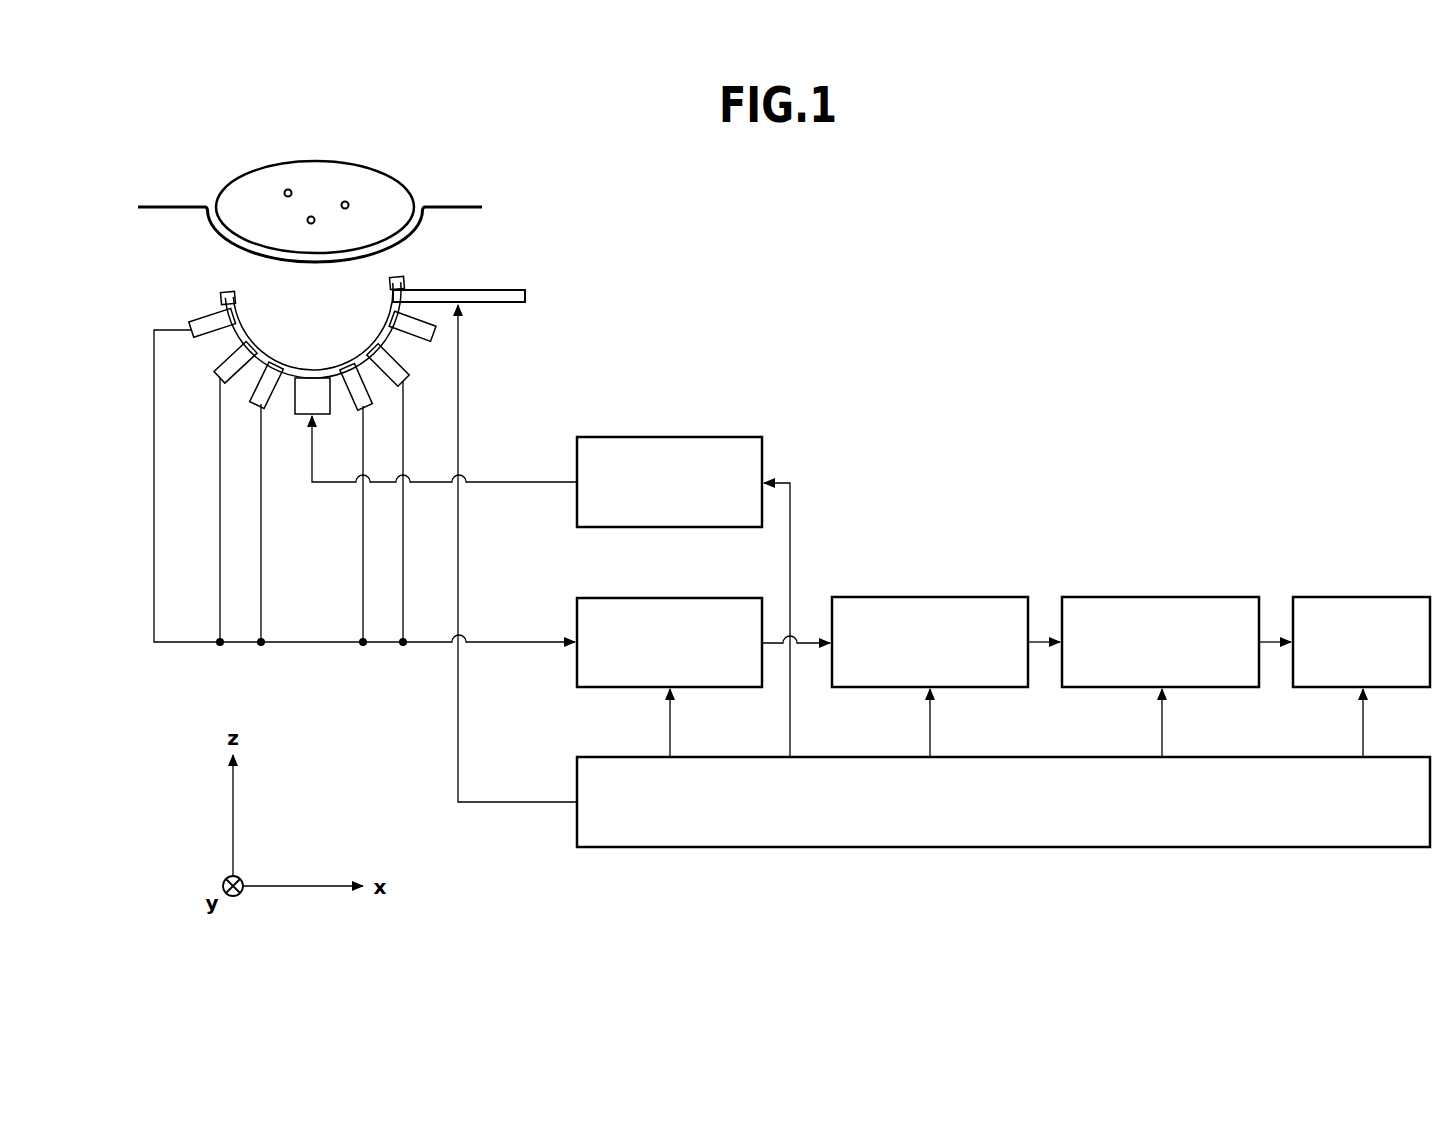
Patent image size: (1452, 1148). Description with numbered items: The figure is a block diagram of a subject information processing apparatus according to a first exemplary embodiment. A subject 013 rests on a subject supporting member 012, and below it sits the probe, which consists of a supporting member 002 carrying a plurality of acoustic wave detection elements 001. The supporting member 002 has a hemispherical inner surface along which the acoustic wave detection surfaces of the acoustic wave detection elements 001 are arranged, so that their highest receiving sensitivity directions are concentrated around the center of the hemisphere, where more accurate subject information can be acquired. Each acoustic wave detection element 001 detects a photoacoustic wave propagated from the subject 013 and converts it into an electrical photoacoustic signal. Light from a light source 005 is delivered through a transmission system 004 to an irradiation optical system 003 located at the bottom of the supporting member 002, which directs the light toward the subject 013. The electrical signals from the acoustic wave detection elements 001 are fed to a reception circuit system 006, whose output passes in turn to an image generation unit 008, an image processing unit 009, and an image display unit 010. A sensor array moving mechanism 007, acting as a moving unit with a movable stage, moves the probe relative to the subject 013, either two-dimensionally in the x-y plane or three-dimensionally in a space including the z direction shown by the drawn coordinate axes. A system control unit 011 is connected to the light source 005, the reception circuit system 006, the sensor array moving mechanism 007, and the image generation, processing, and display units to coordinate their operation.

The acoustic wave detection elements 001 is at (207, 313).
The supporting member 002 is at (398, 279).
The irradiation optical system 003 is at (301, 416).
The transmission system 004 is at (518, 482).
The light source 005 is at (670, 437).
The reception circuit system 006 is at (670, 598).
The sensor array moving mechanism 007 is at (503, 290).
The image generation unit 008 is at (929, 597).
The image processing unit 009 is at (1160, 597).
The image display unit 010 is at (1361, 597).
The system control unit 011 is at (1009, 847).
The subject supporting member 012 is at (450, 207).
The subject 013 is at (322, 172).